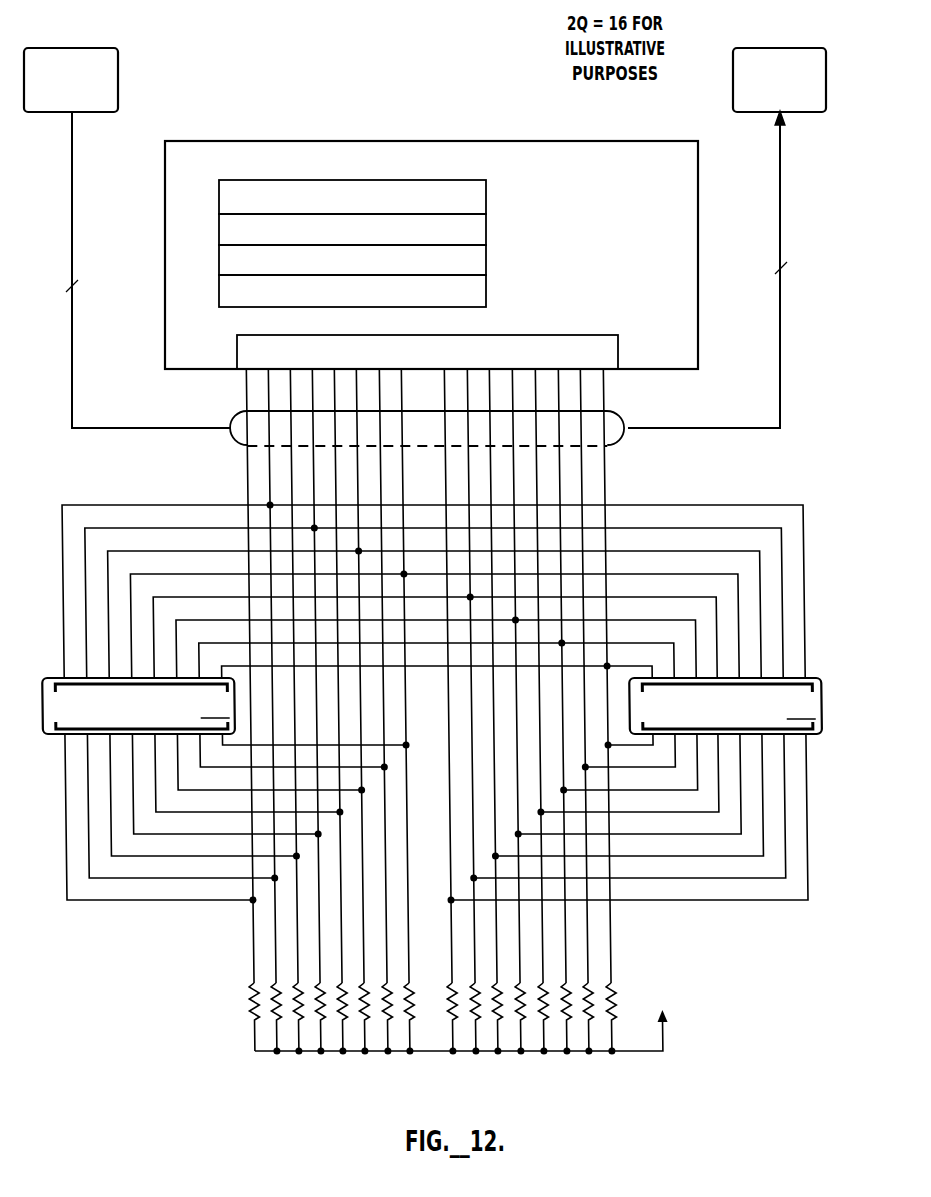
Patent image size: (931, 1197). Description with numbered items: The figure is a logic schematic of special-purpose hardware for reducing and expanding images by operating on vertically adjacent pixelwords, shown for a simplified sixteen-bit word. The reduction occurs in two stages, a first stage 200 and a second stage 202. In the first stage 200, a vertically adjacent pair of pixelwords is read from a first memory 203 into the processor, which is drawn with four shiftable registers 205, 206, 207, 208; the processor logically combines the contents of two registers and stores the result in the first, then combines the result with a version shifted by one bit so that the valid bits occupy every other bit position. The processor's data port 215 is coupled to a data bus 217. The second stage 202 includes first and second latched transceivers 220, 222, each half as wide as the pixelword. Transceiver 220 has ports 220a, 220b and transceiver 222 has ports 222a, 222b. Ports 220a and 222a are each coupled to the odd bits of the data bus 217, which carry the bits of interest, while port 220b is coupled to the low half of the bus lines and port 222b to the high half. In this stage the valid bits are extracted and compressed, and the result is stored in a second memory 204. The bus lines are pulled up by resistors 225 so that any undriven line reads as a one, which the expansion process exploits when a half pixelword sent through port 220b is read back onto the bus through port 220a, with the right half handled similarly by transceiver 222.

The first stage 200 is at (346, 138).
The second stage 202 is at (142, 933).
The first memory 203 is at (118, 78).
The second memory 204 is at (768, 48).
The register 205 is at (486, 198).
The register 206 is at (486, 230).
The register 207 is at (486, 262).
The register 208 is at (486, 293).
The data port 215 is at (600, 335).
The data bus 217 is at (623, 420).
The first latched transceiver 220 is at (128, 707).
The port of transceiver 220 220a is at (55, 678).
The port of transceiver 220 220b is at (55, 734).
The second latched transceiver 222 is at (739, 707).
The port of transceiver 222 222a is at (808, 678).
The port of transceiver 222 222b is at (806, 734).
The pull-up resistors 225 is at (246, 1003).